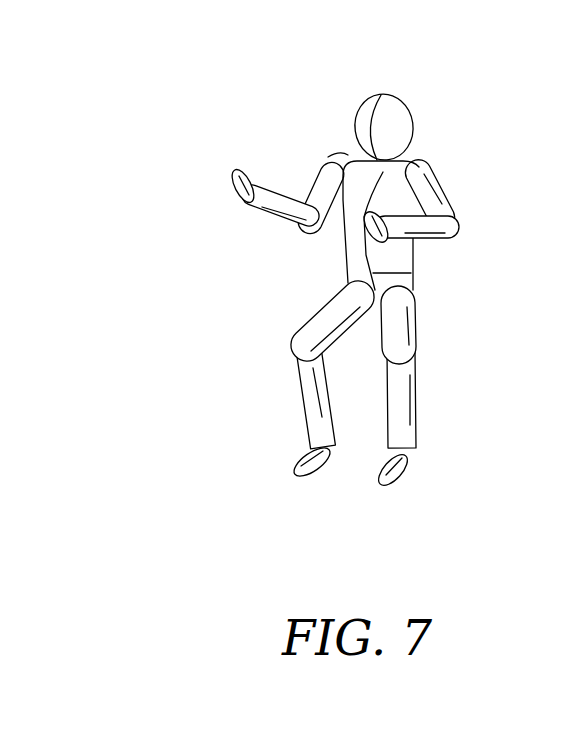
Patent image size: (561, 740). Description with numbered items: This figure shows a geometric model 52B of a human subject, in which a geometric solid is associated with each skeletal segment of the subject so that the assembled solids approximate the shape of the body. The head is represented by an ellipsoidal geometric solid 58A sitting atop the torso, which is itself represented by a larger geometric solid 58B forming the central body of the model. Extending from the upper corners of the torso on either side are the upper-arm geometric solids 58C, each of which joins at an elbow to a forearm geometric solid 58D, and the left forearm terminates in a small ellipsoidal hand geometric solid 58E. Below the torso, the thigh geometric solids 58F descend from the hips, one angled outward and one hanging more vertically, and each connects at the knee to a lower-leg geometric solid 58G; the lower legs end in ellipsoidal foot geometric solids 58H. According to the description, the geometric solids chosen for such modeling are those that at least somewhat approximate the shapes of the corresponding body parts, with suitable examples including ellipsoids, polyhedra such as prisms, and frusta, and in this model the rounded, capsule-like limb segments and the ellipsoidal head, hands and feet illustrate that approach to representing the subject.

The geometric solid 58A is at (408, 104).
The geometric solid 58B is at (381, 225).
The geometric solid 58C is at (325, 184).
The geometric solid 58D is at (269, 222).
The geometric solid 58E is at (228, 175).
The geometric solid 58F is at (317, 318).
The geometric solid 58G is at (299, 408).
The geometric solid 58H is at (293, 465).
The geometric model 52B is at (484, 469).